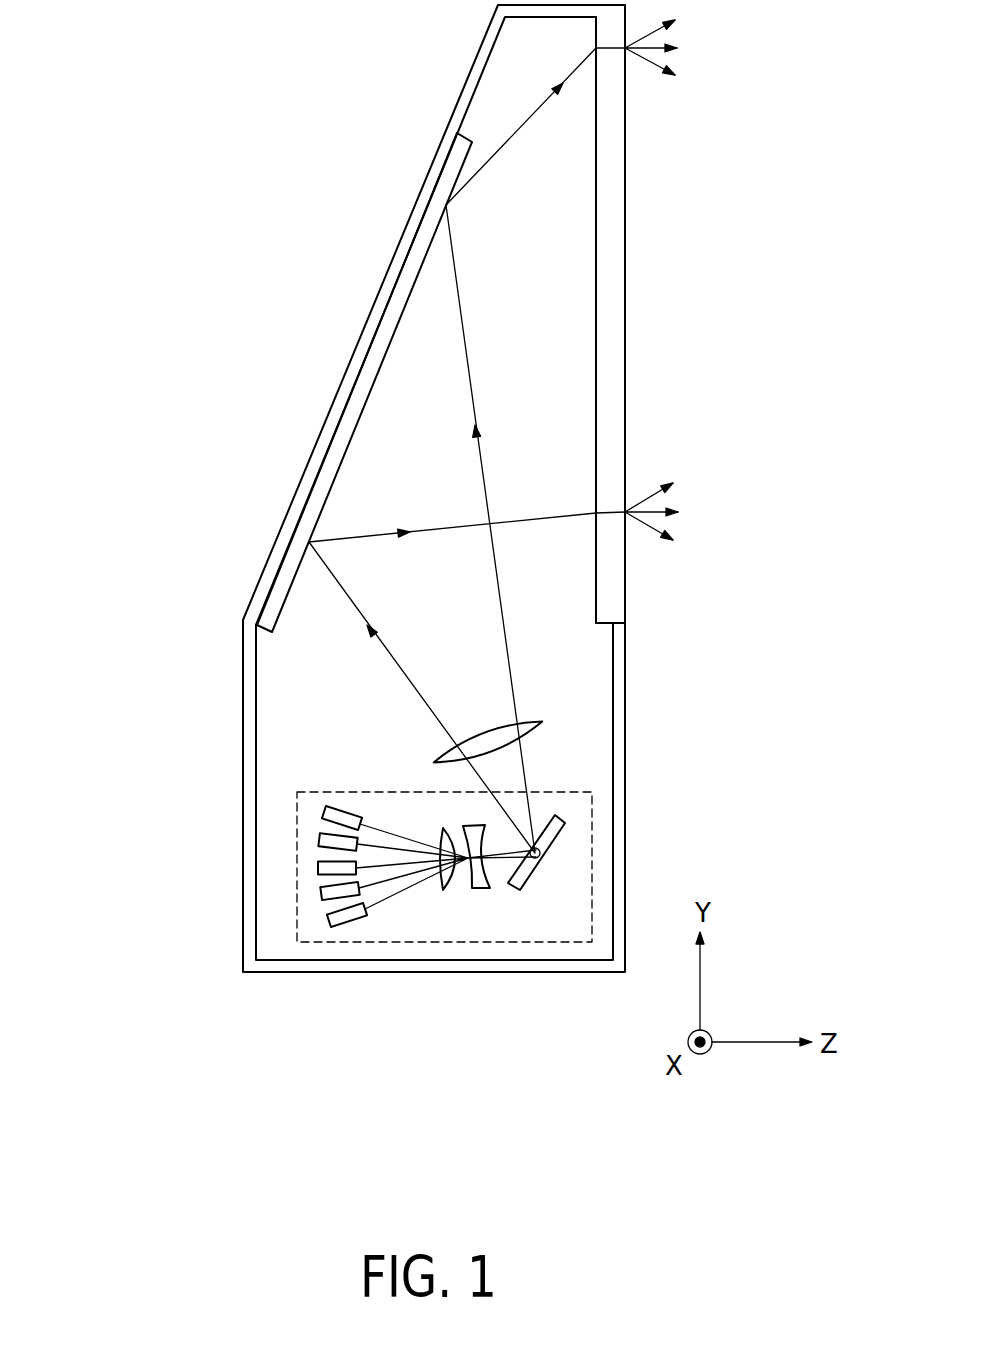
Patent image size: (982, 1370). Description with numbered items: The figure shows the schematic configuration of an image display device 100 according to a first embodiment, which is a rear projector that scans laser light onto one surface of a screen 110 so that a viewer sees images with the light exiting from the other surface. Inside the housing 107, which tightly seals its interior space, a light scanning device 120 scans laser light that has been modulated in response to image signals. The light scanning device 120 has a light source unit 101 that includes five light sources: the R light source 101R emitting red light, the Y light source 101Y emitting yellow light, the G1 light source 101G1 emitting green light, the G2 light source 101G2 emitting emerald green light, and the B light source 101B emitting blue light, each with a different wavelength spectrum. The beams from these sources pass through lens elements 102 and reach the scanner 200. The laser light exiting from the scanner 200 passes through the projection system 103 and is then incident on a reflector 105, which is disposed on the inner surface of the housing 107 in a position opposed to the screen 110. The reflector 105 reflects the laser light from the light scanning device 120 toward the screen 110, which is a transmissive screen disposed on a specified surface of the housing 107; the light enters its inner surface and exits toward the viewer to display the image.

The image display device 100 is at (363, 105).
The light source unit 101 is at (204, 852).
The R light source 101R is at (323, 812).
The Y light source 101Y is at (322, 840).
The G1 light source 101G1 is at (318, 867).
The G2 light source 101G2 is at (322, 893).
The B light source 101B is at (330, 917).
The collimating lens group 102 is at (496, 896).
The projection system 103 is at (532, 722).
The reflector 105 is at (292, 560).
The housing 107 is at (618, 798).
The screen 110 is at (620, 247).
The light scanning device 120 is at (342, 790).
The scanner 200 is at (532, 878).